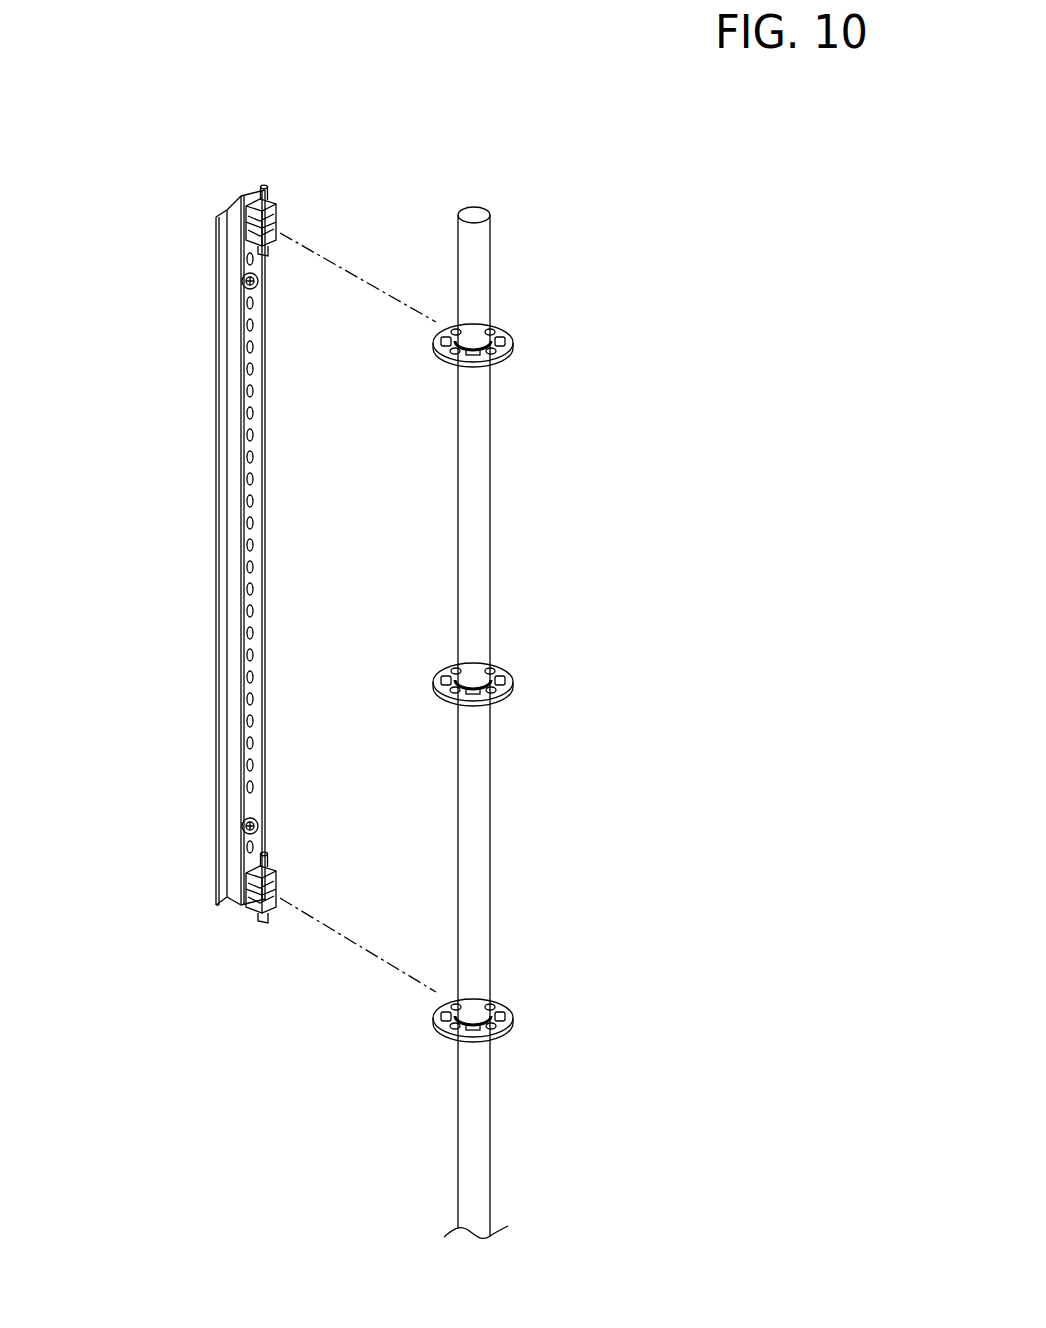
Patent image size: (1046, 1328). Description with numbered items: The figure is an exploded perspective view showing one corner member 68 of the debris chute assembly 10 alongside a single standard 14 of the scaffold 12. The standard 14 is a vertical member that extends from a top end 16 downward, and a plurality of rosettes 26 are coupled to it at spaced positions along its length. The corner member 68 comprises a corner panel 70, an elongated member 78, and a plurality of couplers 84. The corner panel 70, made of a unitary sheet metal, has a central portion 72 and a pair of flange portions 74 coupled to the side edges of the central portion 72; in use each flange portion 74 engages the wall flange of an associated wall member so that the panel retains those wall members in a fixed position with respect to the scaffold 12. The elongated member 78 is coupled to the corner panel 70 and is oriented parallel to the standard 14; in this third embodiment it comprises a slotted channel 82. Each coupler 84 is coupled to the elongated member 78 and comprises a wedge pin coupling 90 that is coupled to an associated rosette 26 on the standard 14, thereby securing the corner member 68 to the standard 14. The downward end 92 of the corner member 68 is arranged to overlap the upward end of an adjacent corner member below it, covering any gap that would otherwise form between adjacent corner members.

The debris chute assembly 10 is at (441, 110).
The scaffold 12 is at (535, 684).
The standard 14 is at (480, 525).
The top end 16 is at (474, 212).
The rosette 26 is at (513, 343).
The corner member 68 is at (227, 540).
The corner panel 70 is at (222, 554).
The central portion 72 is at (215, 218).
The flange portion 74 is at (218, 283).
The elongated member 78 is at (277, 593).
The slotted channel 82 is at (246, 473).
The coupler 84 is at (314, 570).
The wedge pin coupling 90 is at (265, 194).
The downward end 92 is at (226, 895).